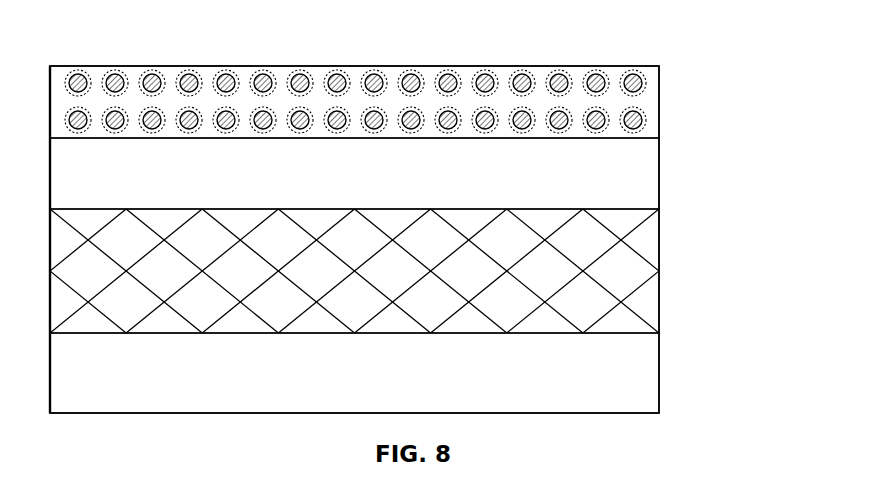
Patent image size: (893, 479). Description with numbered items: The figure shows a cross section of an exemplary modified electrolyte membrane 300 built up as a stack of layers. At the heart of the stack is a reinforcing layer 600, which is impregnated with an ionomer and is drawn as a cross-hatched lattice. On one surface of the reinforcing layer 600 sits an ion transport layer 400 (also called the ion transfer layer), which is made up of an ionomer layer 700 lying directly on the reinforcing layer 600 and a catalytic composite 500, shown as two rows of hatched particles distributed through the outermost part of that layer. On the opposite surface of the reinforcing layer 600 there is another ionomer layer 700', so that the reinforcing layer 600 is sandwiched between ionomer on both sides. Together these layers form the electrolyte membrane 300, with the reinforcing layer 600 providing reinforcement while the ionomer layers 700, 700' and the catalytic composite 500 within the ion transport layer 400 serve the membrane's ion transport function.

The electrolyte membrane 300 is at (267, 38).
The ion transport layer 400 is at (659, 92).
The catalytic composite 500 is at (485, 73).
The reinforcing layer 600 is at (659, 281).
The ionomer layer 700 is at (408, 173).
The another ionomer layer 700' is at (411, 373).